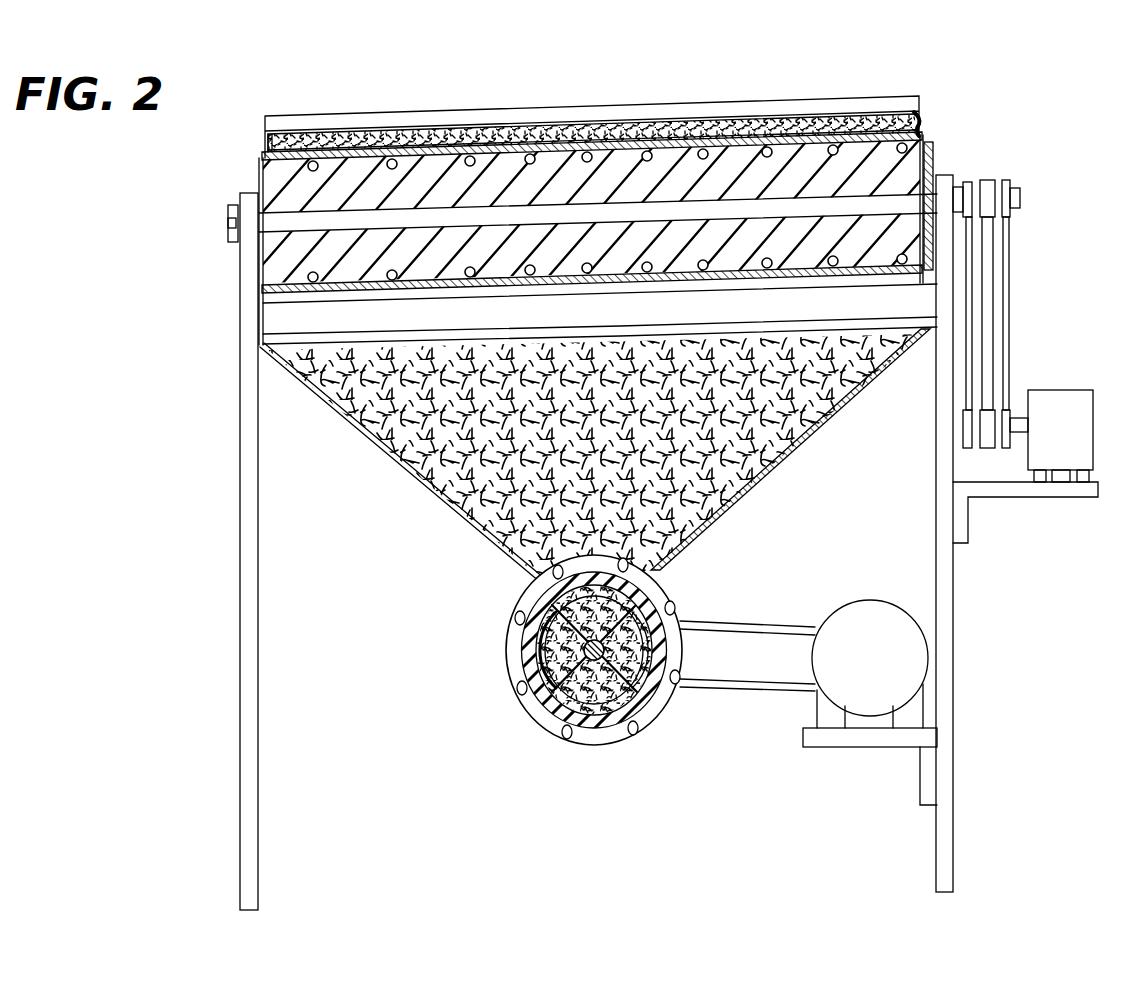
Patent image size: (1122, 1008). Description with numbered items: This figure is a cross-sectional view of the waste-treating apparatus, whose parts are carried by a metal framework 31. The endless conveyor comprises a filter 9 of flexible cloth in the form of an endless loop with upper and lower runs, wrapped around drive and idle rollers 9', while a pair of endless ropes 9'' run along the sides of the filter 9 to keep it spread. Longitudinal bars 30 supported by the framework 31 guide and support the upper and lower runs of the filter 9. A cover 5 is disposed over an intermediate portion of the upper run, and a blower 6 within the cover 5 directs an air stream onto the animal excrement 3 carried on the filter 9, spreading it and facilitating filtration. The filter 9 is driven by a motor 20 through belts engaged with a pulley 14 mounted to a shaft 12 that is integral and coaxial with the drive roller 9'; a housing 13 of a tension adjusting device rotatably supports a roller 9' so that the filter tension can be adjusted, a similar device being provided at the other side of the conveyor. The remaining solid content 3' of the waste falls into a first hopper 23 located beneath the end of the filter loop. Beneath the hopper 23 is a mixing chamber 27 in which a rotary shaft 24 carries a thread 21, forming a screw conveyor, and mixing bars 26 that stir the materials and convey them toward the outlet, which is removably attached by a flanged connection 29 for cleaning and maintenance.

The animal excrement 3 is at (591, 107).
The solid content of the waste material 3' is at (595, 462).
The cover 5 is at (903, 104).
The blower 6 is at (793, 119).
The filter 9 is at (592, 175).
The drive and idle rollers 9' is at (940, 93).
The ropes 9'' is at (948, 182).
The shaft 12 is at (903, 203).
The housing 13 is at (228, 230).
The pulley 14 is at (1010, 215).
The motor 20 is at (1072, 402).
The thread 21 is at (612, 740).
The first hopper 23 is at (388, 450).
The rotary shaft 24 is at (545, 650).
The mixing bars 26 is at (637, 715).
The mixing chamber 27 is at (558, 735).
The flanged connection 29 is at (530, 700).
The longitudinal bars 30 is at (296, 141).
The framework 31 is at (243, 432).